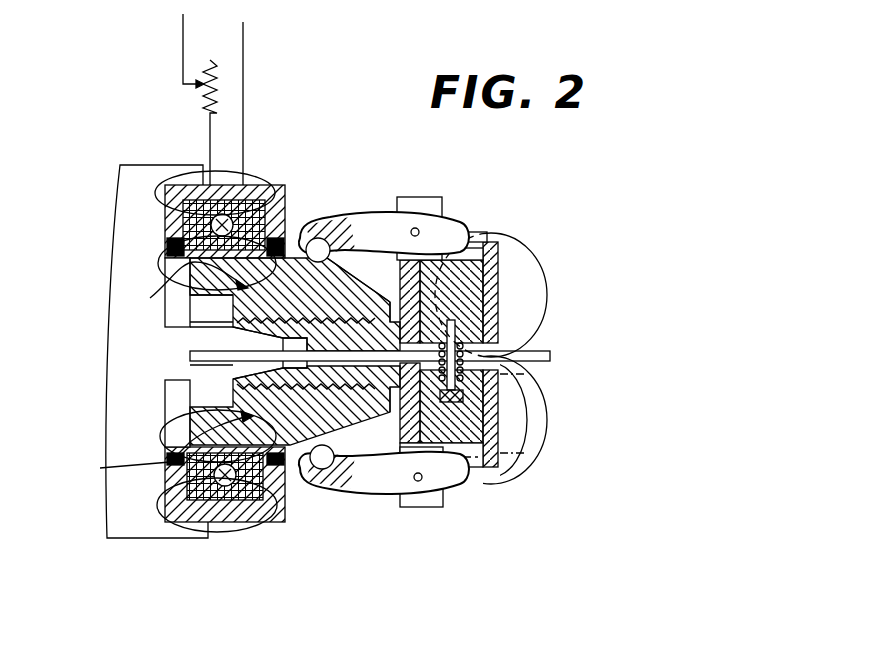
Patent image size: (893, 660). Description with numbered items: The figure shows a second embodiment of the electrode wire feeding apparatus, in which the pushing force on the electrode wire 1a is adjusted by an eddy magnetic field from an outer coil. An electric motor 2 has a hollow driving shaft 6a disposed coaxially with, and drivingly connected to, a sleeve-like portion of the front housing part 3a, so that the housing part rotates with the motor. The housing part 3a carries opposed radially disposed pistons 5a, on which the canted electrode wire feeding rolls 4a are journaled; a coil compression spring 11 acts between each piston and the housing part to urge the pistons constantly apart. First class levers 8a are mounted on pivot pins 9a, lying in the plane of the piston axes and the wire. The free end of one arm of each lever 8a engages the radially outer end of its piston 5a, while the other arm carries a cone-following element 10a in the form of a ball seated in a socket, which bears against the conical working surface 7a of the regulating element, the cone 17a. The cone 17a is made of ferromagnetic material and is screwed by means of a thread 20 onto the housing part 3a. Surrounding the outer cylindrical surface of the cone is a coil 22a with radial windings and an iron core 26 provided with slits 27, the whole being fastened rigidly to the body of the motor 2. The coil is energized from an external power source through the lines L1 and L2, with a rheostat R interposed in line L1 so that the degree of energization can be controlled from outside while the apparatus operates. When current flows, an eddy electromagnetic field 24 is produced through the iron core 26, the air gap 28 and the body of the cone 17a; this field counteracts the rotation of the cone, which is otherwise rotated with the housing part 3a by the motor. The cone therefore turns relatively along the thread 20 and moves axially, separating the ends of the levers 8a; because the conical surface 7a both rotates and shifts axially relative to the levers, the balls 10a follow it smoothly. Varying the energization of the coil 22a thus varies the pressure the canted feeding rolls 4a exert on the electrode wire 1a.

The electric motor 2 is at (108, 508).
The supply line L1 is at (183, 40).
The supply line L2 is at (243, 57).
The rheostat R is at (207, 97).
The eddy electromagnetic field 24 is at (162, 272).
The iron core 26 is at (170, 480).
The slits 27 is at (152, 446).
The air gap 28 is at (184, 287).
The coil 22a is at (203, 490).
The cone 17a is at (245, 311).
The thread 20 is at (283, 376).
The hollow driving shaft 6a is at (247, 338).
The electrode wire 1a is at (548, 355).
The conical surface 7a is at (340, 278).
The piston 5a is at (477, 275).
The coil compression spring 11 is at (483, 418).
The canted electrode wire feeding roll 4a is at (537, 298).
The housing part 3a is at (410, 420).
The lever 8a is at (375, 218).
The pivot pin 9a is at (419, 228).
The cone-following element 10a is at (318, 470).